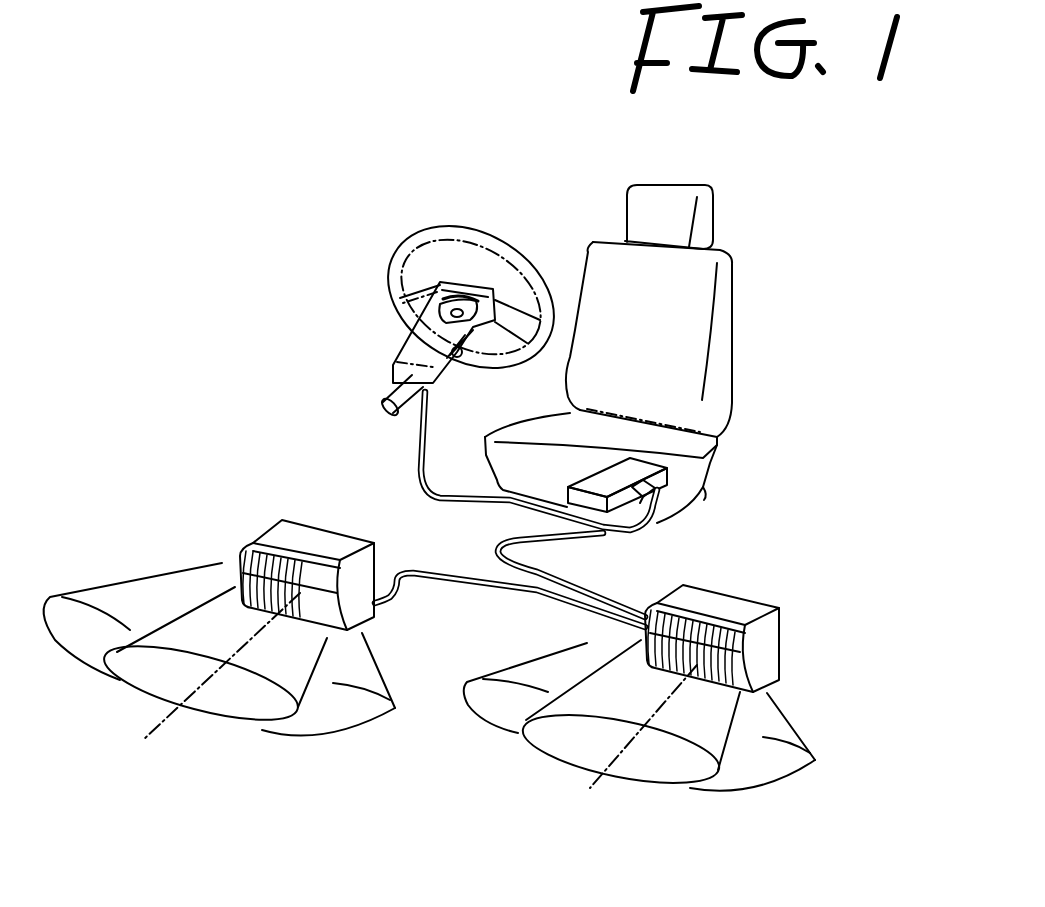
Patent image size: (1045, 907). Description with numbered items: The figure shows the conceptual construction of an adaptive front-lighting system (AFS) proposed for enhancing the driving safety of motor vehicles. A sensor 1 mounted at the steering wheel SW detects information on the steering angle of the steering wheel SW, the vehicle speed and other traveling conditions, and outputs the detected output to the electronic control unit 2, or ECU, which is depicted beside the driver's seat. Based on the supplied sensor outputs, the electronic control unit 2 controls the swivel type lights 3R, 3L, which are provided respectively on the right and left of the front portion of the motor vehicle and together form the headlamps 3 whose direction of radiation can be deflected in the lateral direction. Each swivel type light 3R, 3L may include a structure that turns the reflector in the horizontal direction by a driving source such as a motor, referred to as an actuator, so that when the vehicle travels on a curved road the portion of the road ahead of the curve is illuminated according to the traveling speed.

The steering wheel SW is at (473, 230).
The sensor 1 is at (465, 292).
The electronic control unit 2 is at (650, 458).
The headlamps 3 is at (333, 454).
The swivel type light 3R is at (283, 521).
The swivel type light 3L is at (727, 593).